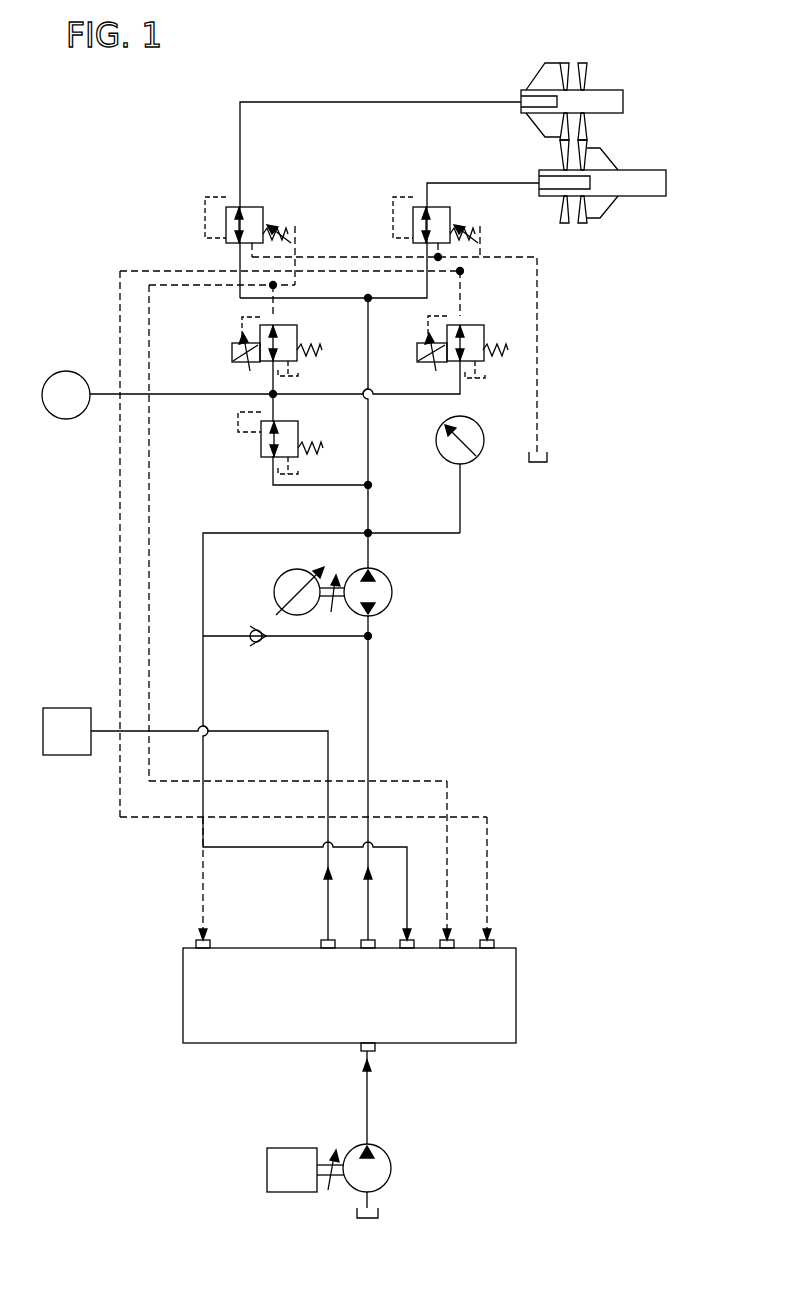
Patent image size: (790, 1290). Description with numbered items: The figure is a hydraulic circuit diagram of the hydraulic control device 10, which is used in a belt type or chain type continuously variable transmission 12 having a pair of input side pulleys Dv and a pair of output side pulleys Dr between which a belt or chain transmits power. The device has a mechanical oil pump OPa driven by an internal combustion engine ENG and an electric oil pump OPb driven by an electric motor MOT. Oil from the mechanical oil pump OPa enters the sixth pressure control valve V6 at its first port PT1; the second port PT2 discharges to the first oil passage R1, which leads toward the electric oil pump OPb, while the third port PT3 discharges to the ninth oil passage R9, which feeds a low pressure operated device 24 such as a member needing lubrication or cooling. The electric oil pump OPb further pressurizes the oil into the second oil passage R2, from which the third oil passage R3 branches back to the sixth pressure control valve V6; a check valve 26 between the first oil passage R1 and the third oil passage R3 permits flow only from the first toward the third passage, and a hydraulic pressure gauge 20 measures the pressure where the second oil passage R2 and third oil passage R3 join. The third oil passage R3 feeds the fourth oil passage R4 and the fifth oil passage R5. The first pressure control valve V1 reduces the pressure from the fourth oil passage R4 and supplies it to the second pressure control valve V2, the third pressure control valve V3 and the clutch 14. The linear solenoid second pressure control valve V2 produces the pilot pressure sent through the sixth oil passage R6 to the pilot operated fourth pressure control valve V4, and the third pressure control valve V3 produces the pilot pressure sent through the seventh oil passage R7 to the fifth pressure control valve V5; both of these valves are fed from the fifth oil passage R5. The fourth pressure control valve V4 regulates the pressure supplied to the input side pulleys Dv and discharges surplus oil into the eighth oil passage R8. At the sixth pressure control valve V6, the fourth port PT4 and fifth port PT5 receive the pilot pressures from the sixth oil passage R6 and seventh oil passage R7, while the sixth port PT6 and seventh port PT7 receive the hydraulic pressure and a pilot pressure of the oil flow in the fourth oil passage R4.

The hydraulic control device 10 is at (159, 121).
The continuously variable transmission 12 is at (672, 69).
The input side pulleys Dv is at (605, 59).
The output side pulleys Dr is at (628, 158).
The clutch 14 is at (66, 371).
The hydraulic pressure gauge 20 is at (482, 447).
The low pressure operated device 24 is at (66, 708).
The check valve 26 is at (251, 628).
The first pressure control valve V1 is at (300, 437).
The second pressure control valve V2 is at (300, 341).
The third pressure control valve V3 is at (485, 336).
The fourth pressure control valve V4 is at (264, 218).
The fifth pressure control valve V5 is at (451, 218).
The sixth pressure control valve V6 is at (495, 1016).
The first oil passage R1 is at (370, 690).
The second oil passage R2 is at (372, 551).
The third oil passage R3 is at (207, 690).
The fourth oil passage R4 is at (325, 484).
The fifth oil passage R5 is at (372, 437).
The sixth oil passage R6 is at (287, 302).
The seventh oil passage R7 is at (470, 275).
The eighth oil passage R8 is at (362, 256).
The ninth oil passage R9 is at (280, 731).
The electric motor MOT is at (282, 577).
The mechanical oil pump OPa is at (392, 1162).
The electric oil pump OPb is at (393, 592).
The internal combustion engine ENG is at (267, 1170).
The first port PT1 is at (374, 1050).
The second port PT2 is at (367, 956).
The third port PT3 is at (322, 943).
The fourth port PT4 is at (447, 956).
The fifth port PT5 is at (487, 956).
The sixth port PT6 is at (407, 956).
The seventh port PT7 is at (196, 943).